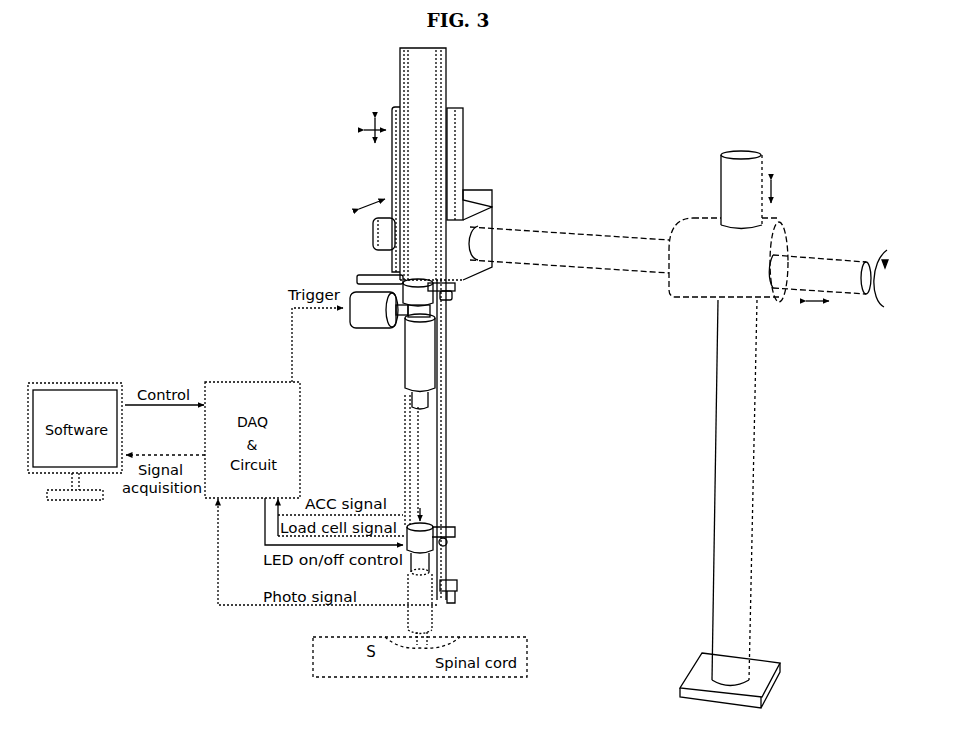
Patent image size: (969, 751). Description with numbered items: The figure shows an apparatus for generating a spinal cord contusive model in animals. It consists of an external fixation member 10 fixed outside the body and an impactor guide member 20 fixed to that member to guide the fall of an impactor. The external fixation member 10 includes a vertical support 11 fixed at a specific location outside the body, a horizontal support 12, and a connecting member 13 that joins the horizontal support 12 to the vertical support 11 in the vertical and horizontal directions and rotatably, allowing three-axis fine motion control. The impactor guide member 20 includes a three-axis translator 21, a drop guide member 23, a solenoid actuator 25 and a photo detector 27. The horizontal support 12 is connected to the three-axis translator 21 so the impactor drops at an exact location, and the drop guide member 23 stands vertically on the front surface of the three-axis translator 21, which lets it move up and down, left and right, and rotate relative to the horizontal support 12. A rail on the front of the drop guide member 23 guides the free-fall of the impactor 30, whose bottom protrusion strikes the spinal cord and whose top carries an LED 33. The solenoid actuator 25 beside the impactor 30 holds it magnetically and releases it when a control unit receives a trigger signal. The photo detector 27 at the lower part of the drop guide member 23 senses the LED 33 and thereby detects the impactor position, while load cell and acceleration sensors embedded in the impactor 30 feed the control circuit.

The external fixation member 10 is at (782, 331).
The vertical support 11 is at (740, 413).
The horizontal support 12 is at (822, 265).
The connecting member 13 is at (697, 240).
The impactor guide member 20 is at (359, 249).
The 3-axis translator 21 is at (474, 184).
The drop guide member 23 is at (412, 180).
The solenoid actuator 25 is at (366, 333).
The photo detector 27 is at (463, 585).
The impactor 30 is at (432, 357).
The LED 33 is at (456, 298).